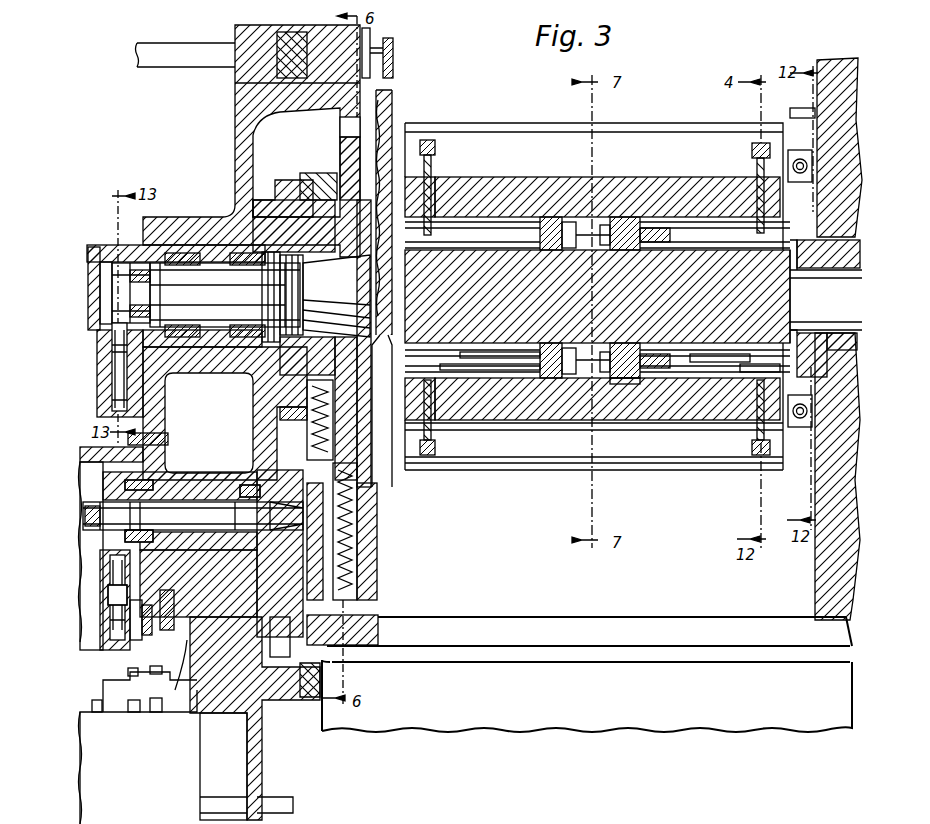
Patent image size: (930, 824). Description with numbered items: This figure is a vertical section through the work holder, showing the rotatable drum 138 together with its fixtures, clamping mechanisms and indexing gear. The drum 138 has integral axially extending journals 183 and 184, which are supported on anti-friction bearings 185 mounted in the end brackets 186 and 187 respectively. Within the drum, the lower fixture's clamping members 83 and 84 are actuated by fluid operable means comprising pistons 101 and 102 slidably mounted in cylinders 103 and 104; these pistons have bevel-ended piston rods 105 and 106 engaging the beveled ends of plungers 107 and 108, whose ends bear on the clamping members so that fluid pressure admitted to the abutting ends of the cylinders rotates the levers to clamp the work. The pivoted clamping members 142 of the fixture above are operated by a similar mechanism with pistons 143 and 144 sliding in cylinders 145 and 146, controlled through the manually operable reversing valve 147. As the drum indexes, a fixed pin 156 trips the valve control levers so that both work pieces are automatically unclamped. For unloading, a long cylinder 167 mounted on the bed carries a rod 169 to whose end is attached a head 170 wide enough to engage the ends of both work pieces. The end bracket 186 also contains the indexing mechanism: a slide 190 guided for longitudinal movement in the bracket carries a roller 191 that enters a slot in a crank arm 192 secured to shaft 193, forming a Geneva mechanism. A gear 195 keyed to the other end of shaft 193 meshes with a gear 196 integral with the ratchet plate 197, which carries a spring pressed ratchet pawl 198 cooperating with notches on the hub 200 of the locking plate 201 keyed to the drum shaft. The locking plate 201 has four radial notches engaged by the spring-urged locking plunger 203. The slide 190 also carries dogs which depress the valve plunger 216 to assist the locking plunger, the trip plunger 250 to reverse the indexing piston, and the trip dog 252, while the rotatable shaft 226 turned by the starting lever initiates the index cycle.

The long cylinder 167 is at (175, 66).
The end bracket 186 is at (240, 105).
The rod 169 is at (372, 45).
The head 170 is at (393, 60).
The locking plate 201 is at (384, 120).
The pivoted clamping members 142 is at (428, 140).
The cylinder 145 is at (515, 222).
The piston 143 is at (545, 222).
The cylinder 146 is at (617, 222).
The piston 144 is at (652, 222).
The fixed pin 156 is at (805, 109).
The manually operable reversing valve 147 is at (805, 155).
The anti-friction bearings 185 is at (185, 335).
The journal 184 is at (845, 322).
The journal 183 is at (203, 290).
The hub 200 is at (300, 185).
The ratchet plate 197 is at (315, 195).
The gear 196 is at (300, 402).
The spring pressed ratchet pawl 198 is at (300, 425).
The crank arm 192 is at (125, 490).
The shaft 193 is at (200, 515).
The locking plunger 203 is at (388, 490).
The clamping member 84 is at (430, 455).
The piston rod 106 is at (480, 362).
The plunger 108 is at (440, 378).
The piston 101 is at (540, 352).
The cylinder 103 is at (518, 372).
The drum 138 is at (570, 462).
The piston 102 is at (650, 365).
The cylinder 104 is at (640, 380).
The piston rod 105 is at (715, 365).
The plunger 107 is at (740, 375).
The clamping member 83 is at (758, 455).
The end bracket 187 is at (828, 576).
The gear 195 is at (284, 639).
The roller 191 is at (120, 635).
The trip dog 252 is at (100, 708).
The plunger 216 is at (135, 715).
The slide 190 is at (155, 705).
The trip plunger 250 is at (165, 705).
The rotatable shaft 226 is at (275, 805).